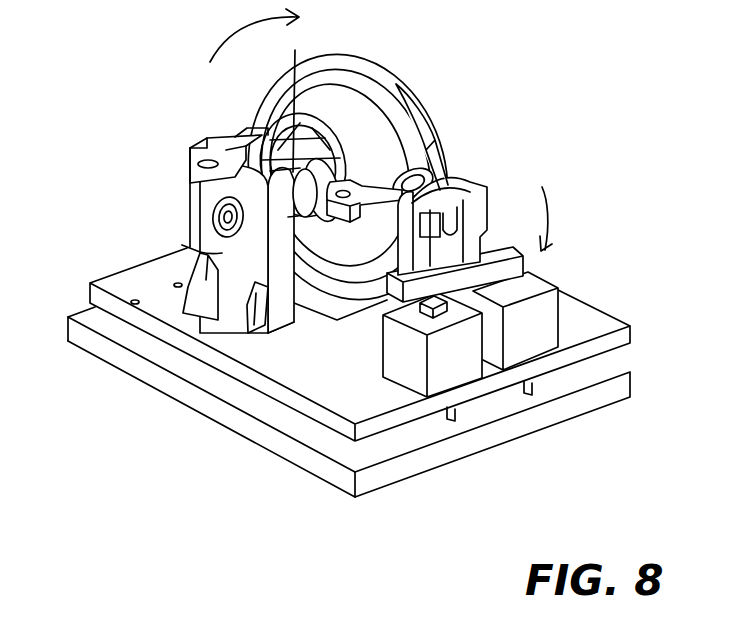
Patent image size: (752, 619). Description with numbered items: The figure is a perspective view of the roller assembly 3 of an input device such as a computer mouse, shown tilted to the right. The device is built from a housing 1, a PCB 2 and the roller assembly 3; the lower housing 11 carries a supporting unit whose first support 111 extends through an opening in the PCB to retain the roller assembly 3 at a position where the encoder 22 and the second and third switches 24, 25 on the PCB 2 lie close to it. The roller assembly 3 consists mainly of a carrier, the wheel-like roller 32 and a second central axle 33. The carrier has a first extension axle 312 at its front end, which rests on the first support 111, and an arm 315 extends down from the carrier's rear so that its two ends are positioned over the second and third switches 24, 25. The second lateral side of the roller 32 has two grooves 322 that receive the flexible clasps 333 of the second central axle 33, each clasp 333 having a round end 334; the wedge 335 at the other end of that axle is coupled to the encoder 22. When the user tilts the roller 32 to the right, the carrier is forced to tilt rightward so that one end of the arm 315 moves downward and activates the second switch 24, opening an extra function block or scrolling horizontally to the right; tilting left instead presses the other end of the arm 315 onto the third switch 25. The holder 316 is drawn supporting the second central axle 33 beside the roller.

The housing 1 is at (612, 374).
The lower housing 11 is at (195, 372).
The PCB 2 is at (606, 326).
The encoder 22 is at (187, 250).
The second switch 24 is at (548, 288).
The third switch 25 is at (437, 325).
The roller assembly 3 is at (382, 50).
The roller 32 is at (368, 82).
The grooves 322 is at (257, 92).
The flexible clasps 333 is at (392, 108).
The round end 334 is at (297, 50).
The wedge 335 is at (220, 227).
The first extension axle 312 is at (222, 133).
The first support 111 is at (247, 133).
The second central axle 33 is at (437, 155).
The holder 316 is at (462, 175).
The arm 315 is at (506, 266).